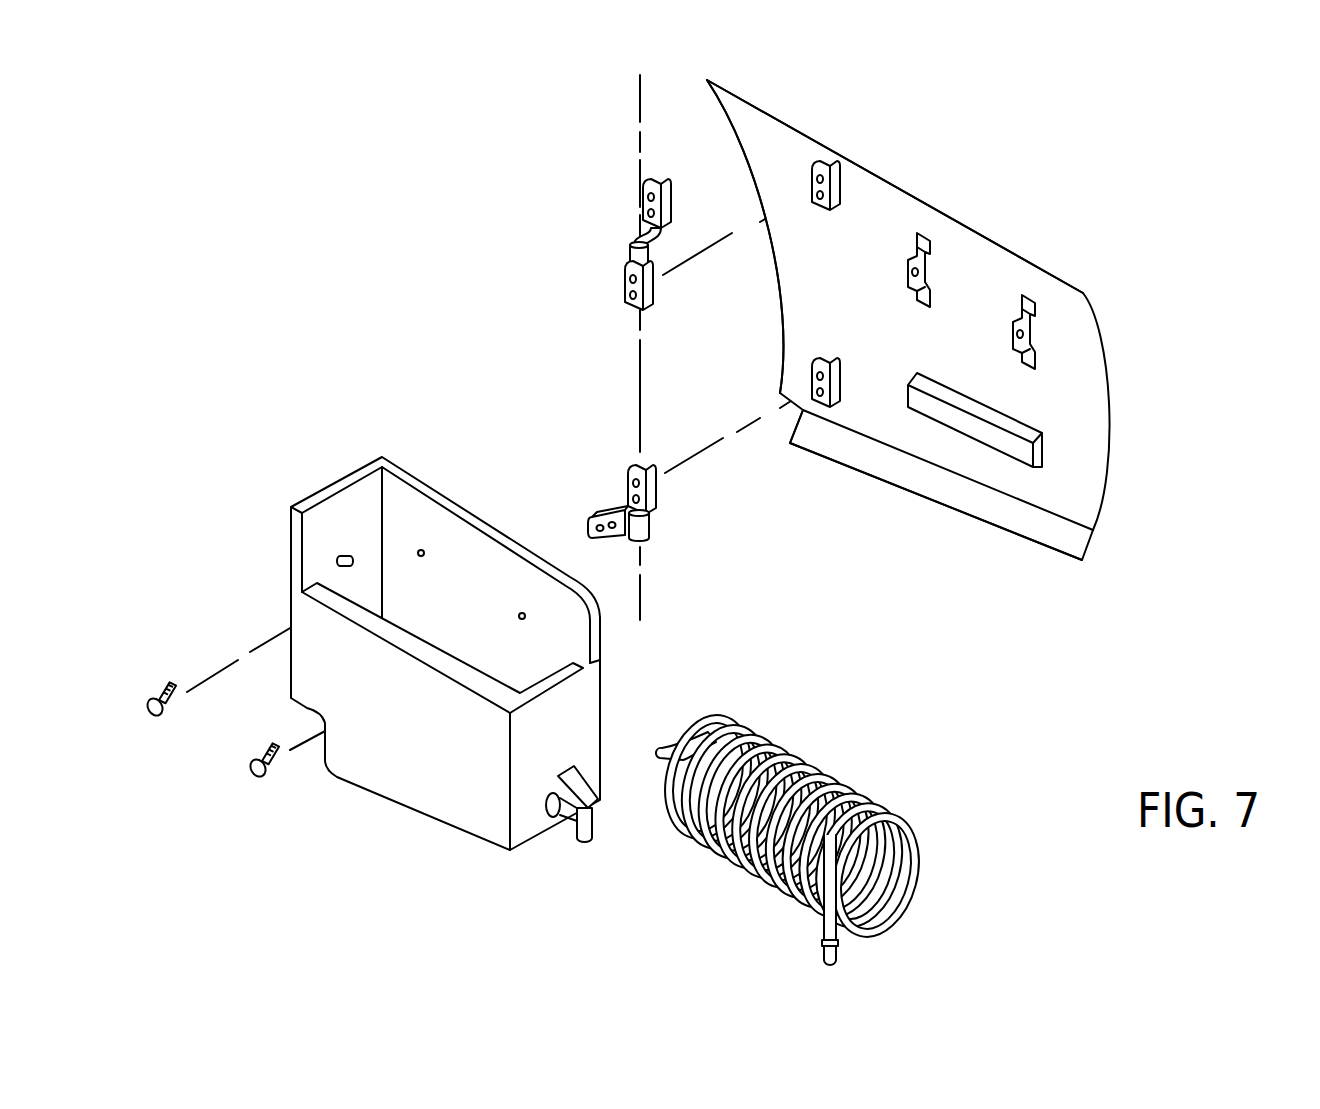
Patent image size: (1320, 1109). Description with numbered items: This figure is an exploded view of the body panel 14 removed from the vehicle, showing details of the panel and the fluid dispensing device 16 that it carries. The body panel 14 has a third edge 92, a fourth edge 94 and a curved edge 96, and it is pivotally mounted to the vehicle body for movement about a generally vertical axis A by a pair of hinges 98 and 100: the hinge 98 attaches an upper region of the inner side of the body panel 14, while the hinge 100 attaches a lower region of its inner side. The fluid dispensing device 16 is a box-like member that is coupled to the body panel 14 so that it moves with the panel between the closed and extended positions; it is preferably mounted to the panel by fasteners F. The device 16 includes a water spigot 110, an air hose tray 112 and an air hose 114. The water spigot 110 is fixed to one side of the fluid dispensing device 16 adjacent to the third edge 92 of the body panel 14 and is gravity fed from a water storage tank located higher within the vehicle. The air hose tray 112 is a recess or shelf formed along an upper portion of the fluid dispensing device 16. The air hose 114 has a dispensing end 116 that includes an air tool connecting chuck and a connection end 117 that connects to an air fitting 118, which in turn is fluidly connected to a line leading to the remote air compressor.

The body panel 14 is at (927, 320).
The fluid dispensing device 16 is at (446, 667).
The third edge 92 is at (1113, 473).
The fourth edge 94 is at (982, 240).
The curved edge 96 is at (738, 132).
The hinge 98 is at (658, 203).
The hinge 100 is at (648, 527).
The water spigot 110 is at (590, 827).
The air hose tray 112 is at (437, 647).
The air hose 114 is at (797, 826).
The dispensing end 116 is at (822, 957).
The connection end 117 is at (665, 745).
The air fitting 118 is at (338, 557).
The vertical axis A is at (638, 100).
The fasteners F is at (250, 765).